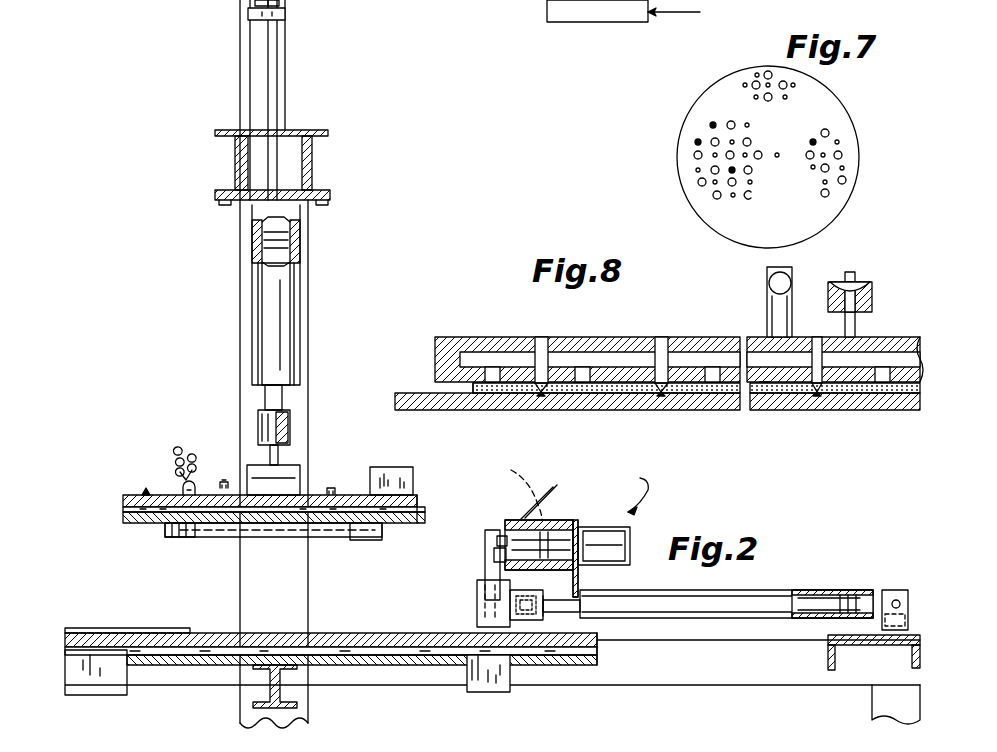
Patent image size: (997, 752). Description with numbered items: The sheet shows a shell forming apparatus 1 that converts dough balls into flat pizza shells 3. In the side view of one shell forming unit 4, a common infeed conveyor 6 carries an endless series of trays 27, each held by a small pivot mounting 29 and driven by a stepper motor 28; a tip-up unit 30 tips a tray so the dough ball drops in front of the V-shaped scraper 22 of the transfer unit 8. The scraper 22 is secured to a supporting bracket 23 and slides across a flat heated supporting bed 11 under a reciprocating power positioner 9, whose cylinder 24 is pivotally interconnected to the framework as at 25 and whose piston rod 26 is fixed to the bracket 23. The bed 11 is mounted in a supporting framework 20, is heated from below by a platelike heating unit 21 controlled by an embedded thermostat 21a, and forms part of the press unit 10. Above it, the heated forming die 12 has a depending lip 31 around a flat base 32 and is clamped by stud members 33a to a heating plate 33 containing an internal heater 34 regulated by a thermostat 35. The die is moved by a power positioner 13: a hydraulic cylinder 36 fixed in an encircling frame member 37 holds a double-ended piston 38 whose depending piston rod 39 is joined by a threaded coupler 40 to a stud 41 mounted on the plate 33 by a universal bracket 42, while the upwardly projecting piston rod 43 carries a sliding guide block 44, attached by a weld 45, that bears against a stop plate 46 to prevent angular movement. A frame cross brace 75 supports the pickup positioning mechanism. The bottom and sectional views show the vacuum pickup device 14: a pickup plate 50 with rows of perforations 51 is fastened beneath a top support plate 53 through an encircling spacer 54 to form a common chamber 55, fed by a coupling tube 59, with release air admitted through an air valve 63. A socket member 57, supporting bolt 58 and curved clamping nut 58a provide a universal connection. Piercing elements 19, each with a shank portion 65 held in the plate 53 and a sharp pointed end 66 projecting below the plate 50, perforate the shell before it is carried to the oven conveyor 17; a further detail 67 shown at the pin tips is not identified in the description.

In FIG. 2, the shell forming apparatus 1 is at (898, 560).
In FIG. 8, the pizza shells 3 is at (494, 395).
In FIG. 2, the shell forming unit 4 is at (648, 488).
In FIG. 2, the infeed conveyor 6 is at (562, 518).
In FIG. 2, the transfer unit 8 is at (480, 580).
In FIG. 2, the reciprocating power positioner 9 is at (788, 588).
In FIG. 2, the press unit 10 is at (348, 486).
In FIG. 2, the flat heated supporting bed 11 is at (408, 633).
In FIG. 2, the heated forming die 12 is at (180, 538).
In FIG. 2, the power positioner 13 is at (300, 272).
In FIG. 7, the vacuum pickup device 14 is at (718, 72).
In FIG. 8, the conveyor 17 is at (840, 412).
In FIG. 7, the piercing elements 19 is at (706, 126).
In FIG. 8, the piercing elements 19 is at (660, 394).
In FIG. 2, the supporting framework 20 is at (690, 688).
In FIG. 2, the platelike heating unit 21 is at (190, 668).
In FIG. 2, the thermostat 21a is at (166, 630).
In FIG. 2, the scraper 22 is at (477, 604).
In FIG. 2, the supporting bracket 23 is at (542, 636).
In FIG. 2, the cylinder 24 is at (728, 588).
In FIG. 2, the pivot connection 25 is at (898, 600).
In FIG. 2, the piston rod 26 is at (578, 622).
In FIG. 2, the trays 27 is at (538, 578).
In FIG. 2, the stepper motor 28 is at (630, 528).
In FIG. 2, the pivot mounting 29 is at (500, 534).
In FIG. 2, the tip-up unit 30 is at (494, 552).
In FIG. 2, the depending lip 31 is at (344, 537).
In FIG. 2, the flat base 32 is at (372, 538).
In FIG. 2, the heating plate 33 is at (148, 488).
In FIG. 2, the stud members 33a is at (334, 482).
In FIG. 2, the internal heater 34 is at (123, 510).
In FIG. 2, the thermostat 35 is at (192, 452).
In FIG. 2, the hydraulic cylinder 36 is at (280, 316).
In FIG. 2, the encircling frame member 37 is at (314, 168).
In FIG. 2, the double-ended piston 38 is at (252, 244).
In FIG. 2, the depending piston rod 39 is at (284, 398).
In FIG. 2, the threaded coupler 40 is at (290, 424).
In FIG. 2, the stud 41 is at (282, 460).
In FIG. 2, the universal bracket 42 is at (198, 486).
In FIG. 2, the oppositely projecting piston rod 43 is at (280, 88).
In FIG. 2, the sliding guide block 44 is at (288, 20).
In FIG. 2, the weld 45 is at (282, 2).
In FIG. 2, the stop plate 46 is at (240, 28).
In FIG. 7, the pickup plate 50 is at (812, 220).
In FIG. 8, the pickup plate 50 is at (778, 382).
In FIG. 7, the perforations 51 is at (840, 155).
In FIG. 8, the perforations 51 is at (492, 368).
In FIG. 8, the top support plate 53 is at (700, 340).
In FIG. 8, the encircling spacer 54 is at (435, 360).
In FIG. 8, the common chamber 55 is at (622, 358).
In FIG. 8, the socket member 57 is at (872, 295).
In FIG. 8, the supporting bolt 58 is at (856, 272).
In FIG. 8, the clamping nut 58a is at (862, 286).
In FIG. 8, the coupling tube 59 is at (768, 272).
In FIG. 2, the air valve 63 is at (360, 0).
In FIG. 8, the shank portion 65 is at (536, 364).
In FIG. 8, the sharp pointed end 66 is at (548, 395).
In FIG. 8, the pin tip 67 is at (540, 396).
In FIG. 2, the frame cross brace 75 is at (828, 652).